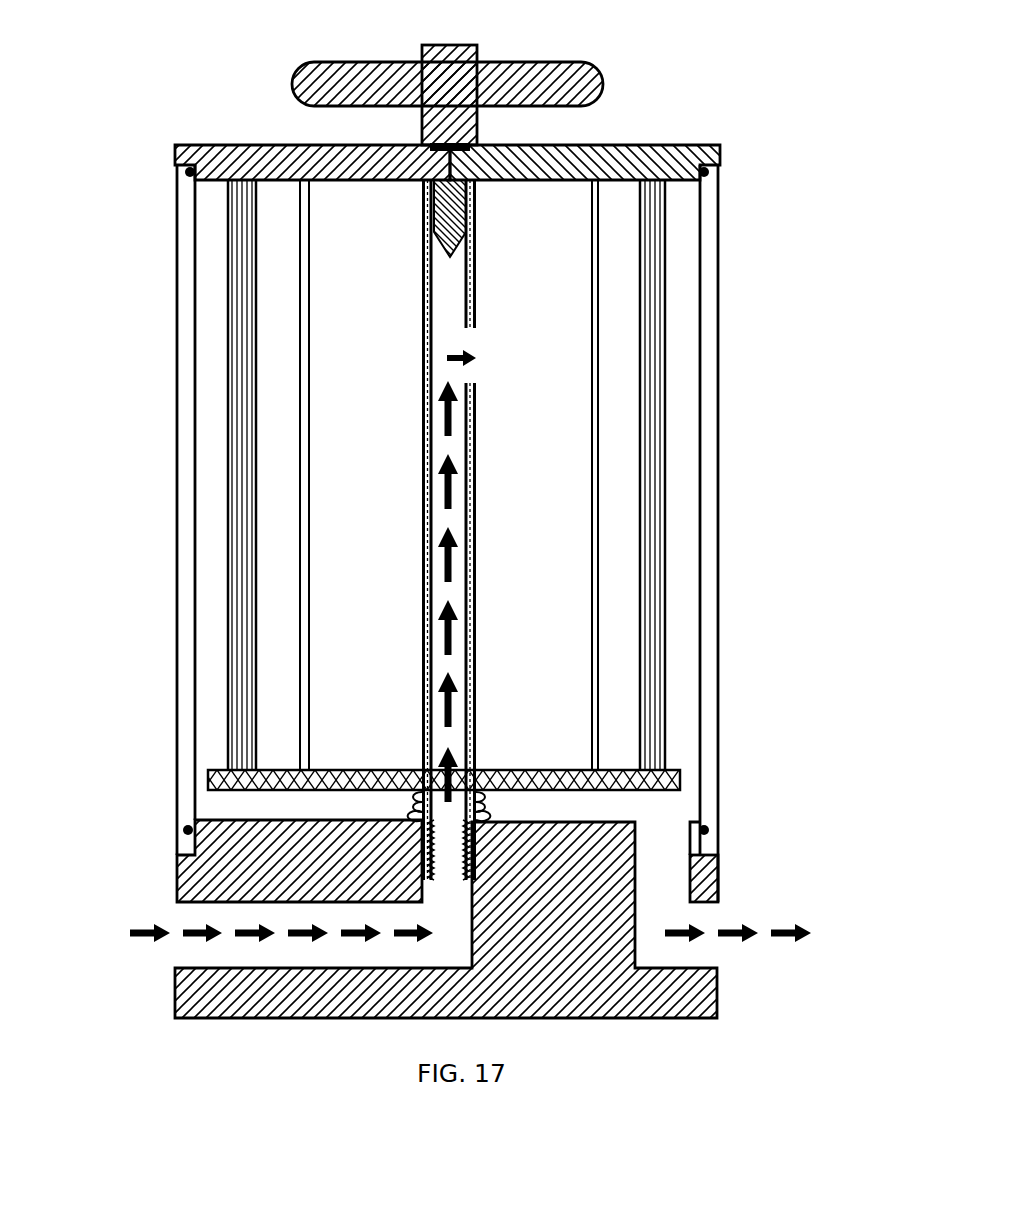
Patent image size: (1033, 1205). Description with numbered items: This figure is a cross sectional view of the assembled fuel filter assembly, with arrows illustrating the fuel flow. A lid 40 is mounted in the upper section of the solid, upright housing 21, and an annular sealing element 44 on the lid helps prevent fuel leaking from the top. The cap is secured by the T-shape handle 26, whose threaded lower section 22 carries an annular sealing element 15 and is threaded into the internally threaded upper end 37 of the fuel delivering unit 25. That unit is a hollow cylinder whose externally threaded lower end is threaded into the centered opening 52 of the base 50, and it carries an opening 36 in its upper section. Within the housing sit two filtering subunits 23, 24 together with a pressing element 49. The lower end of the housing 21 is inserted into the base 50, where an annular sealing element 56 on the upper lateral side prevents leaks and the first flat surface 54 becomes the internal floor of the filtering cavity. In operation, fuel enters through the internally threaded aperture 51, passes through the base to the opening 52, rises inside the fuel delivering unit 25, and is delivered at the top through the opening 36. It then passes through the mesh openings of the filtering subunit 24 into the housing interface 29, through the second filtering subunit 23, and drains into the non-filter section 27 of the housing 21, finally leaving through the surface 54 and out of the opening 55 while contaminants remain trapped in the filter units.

The annular sealing element 15 is at (477, 147).
The housing 21 is at (720, 515).
The lower section 22 is at (175, 152).
The filtering subunit 23 is at (668, 575).
The filtering subunit 24 is at (598, 650).
The fuel delivering unit 25 is at (445, 590).
The T-shape handle 26 is at (580, 75).
The non-filter section 27 is at (683, 270).
The housing interface 29 is at (615, 432).
The opening 36 is at (453, 338).
The upper end 37 is at (432, 205).
The lid 40 is at (720, 152).
The annular sealing element 44 is at (710, 172).
The pressing element 49 is at (410, 803).
The base 50 is at (720, 995).
The aperture 51 is at (183, 947).
The opening 52 is at (447, 847).
The first flat surface 54 is at (615, 757).
The opening 55 is at (702, 913).
The annular sealing element 56 is at (186, 832).